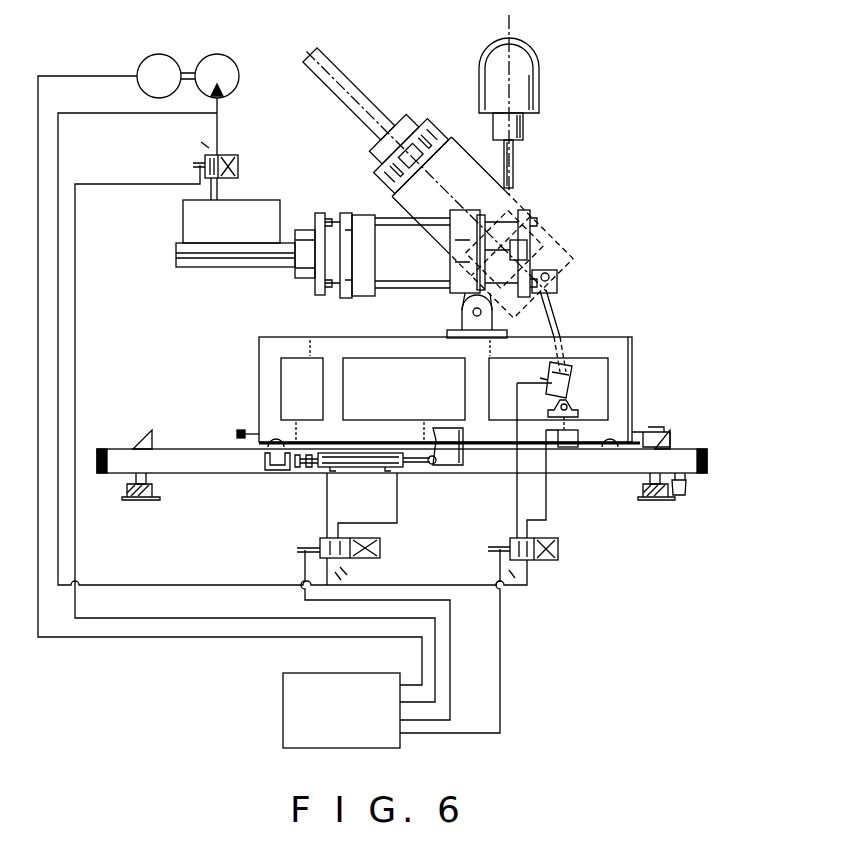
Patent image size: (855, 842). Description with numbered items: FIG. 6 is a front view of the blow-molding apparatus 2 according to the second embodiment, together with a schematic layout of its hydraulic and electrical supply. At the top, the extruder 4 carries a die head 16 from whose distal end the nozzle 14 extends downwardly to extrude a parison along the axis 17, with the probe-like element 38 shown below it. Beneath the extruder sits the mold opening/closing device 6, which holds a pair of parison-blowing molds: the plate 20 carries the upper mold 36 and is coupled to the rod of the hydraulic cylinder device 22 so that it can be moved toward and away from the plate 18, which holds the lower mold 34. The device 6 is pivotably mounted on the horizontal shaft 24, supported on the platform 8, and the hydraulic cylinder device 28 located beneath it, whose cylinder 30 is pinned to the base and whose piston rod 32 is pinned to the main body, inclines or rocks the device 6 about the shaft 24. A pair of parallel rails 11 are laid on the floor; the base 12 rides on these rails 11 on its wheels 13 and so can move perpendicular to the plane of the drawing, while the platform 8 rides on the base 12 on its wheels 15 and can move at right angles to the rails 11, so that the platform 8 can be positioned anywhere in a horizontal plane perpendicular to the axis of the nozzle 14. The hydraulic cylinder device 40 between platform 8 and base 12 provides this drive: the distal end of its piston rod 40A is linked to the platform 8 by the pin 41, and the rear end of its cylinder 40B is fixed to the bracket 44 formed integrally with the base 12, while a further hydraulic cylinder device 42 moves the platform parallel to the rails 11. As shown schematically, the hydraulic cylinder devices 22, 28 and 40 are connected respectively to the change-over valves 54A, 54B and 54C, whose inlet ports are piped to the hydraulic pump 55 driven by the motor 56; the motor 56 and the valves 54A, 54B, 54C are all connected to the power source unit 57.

The blow-molding apparatus 2 is at (598, 205).
The extruder 4 is at (539, 100).
The mold opening/closing device 6 is at (372, 244).
The platform 8 is at (265, 365).
The rails 11 is at (143, 501).
The base 12 is at (695, 452).
The wheels 13 is at (148, 479).
The nozzle 14 is at (523, 128).
The wheels 15 is at (246, 440).
The die head 16 is at (530, 86).
The axis line 17 is at (508, 22).
The plate 18 is at (517, 211).
The plate 20 is at (345, 213).
The hydraulic cylinder device 22 is at (203, 262).
The shaft 24 is at (472, 313).
The hydraulic cylinder device 28 is at (575, 383).
The cylinder 30 is at (556, 394).
The piston rod 32 is at (560, 323).
The lower mold 34 is at (452, 258).
The upper mold 36 is at (362, 286).
The probe rod 38 is at (514, 164).
The hydraulic cylinder device 40 is at (357, 468).
The piston rod 40A is at (410, 467).
The cylinder 40B is at (378, 470).
The pin 41 is at (432, 455).
The hydraulic cylinder device 42 is at (680, 500).
The bracket 44 is at (262, 468).
The change-over valve 54A is at (237, 158).
The change-over valve 54B is at (545, 562).
The change-over valve 54C is at (381, 549).
The hydraulic pump 55 is at (217, 54).
The motor 56 is at (165, 55).
The power source unit 57 is at (283, 714).